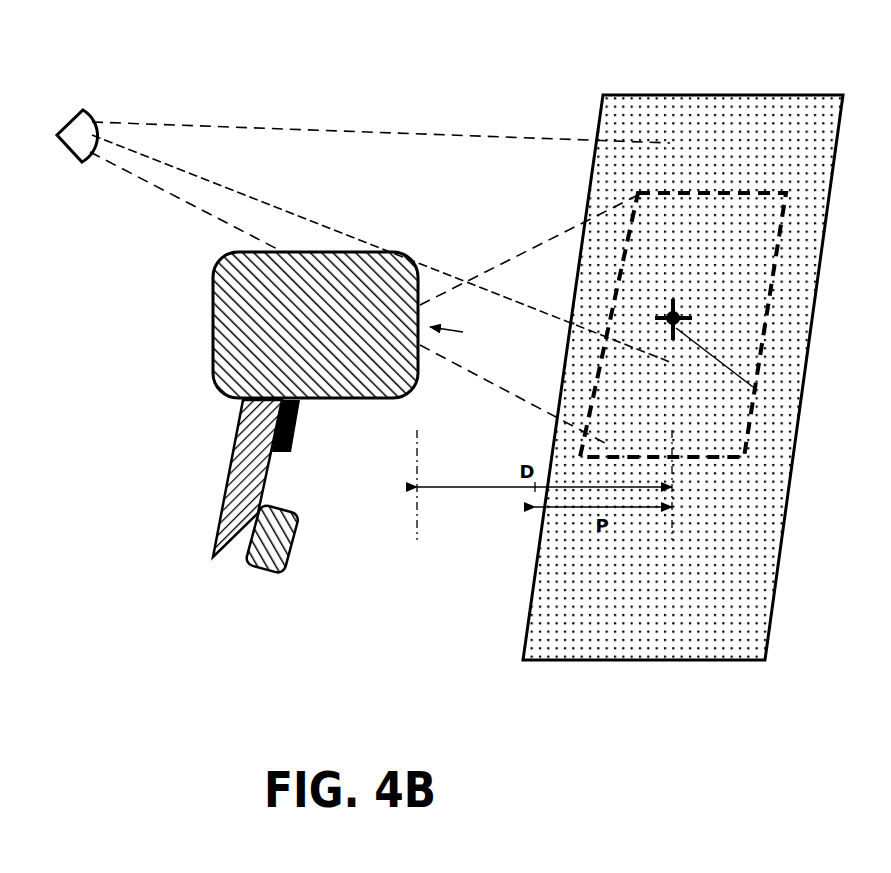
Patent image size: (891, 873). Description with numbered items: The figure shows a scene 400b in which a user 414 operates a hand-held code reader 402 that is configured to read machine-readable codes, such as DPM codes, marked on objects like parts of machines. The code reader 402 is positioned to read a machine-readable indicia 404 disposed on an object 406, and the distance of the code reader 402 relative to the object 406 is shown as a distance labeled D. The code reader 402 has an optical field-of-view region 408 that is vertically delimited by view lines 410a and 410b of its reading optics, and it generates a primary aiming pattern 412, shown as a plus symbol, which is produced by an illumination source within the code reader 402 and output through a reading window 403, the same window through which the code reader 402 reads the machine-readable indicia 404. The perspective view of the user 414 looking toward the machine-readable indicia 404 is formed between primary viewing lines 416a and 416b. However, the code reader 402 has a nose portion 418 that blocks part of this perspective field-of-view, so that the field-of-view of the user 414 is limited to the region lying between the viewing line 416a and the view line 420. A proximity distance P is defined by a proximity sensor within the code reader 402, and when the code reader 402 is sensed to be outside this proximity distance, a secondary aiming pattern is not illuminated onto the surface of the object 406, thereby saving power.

The scene 400b is at (312, 78).
The hand-held code reader 402 is at (293, 382).
The reading window 403 is at (474, 338).
The machine-readable indicia 404 is at (681, 312).
The object 406 is at (655, 92).
The optical field-of-view region 408 is at (713, 193).
The view line 410a is at (553, 240).
The view line 410b is at (552, 410).
The primary aiming pattern 412 is at (741, 373).
The user 414 is at (58, 110).
The primary viewing line 416a is at (227, 127).
The primary viewing line 416b is at (153, 184).
The nose portion 418 is at (400, 250).
The view line 420 is at (300, 213).